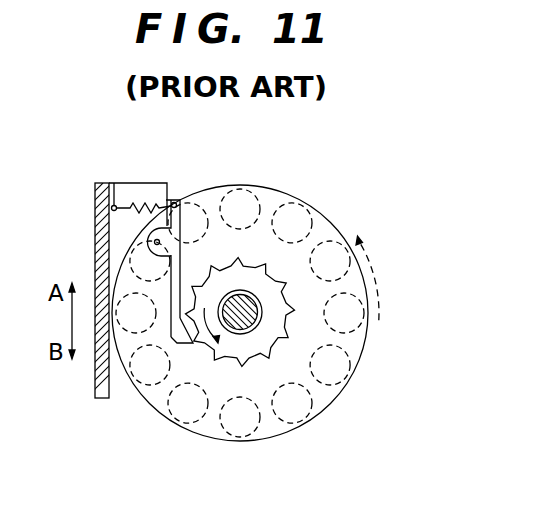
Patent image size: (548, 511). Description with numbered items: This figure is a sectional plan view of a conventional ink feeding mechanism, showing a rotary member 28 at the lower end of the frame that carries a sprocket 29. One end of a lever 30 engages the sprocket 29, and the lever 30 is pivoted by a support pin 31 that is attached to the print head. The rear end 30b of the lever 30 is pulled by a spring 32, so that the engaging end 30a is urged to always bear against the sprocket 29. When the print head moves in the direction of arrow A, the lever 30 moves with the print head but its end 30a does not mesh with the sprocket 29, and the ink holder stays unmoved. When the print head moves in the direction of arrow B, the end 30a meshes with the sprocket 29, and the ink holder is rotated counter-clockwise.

The rotary drum 28 is at (322, 232).
The sprocket 29 is at (288, 330).
The lever 30 is at (153, 297).
The end of the lever 30a is at (177, 343).
The rear end of the lever 30b is at (176, 202).
The support pin 31 is at (154, 241).
The spring 32 is at (137, 206).